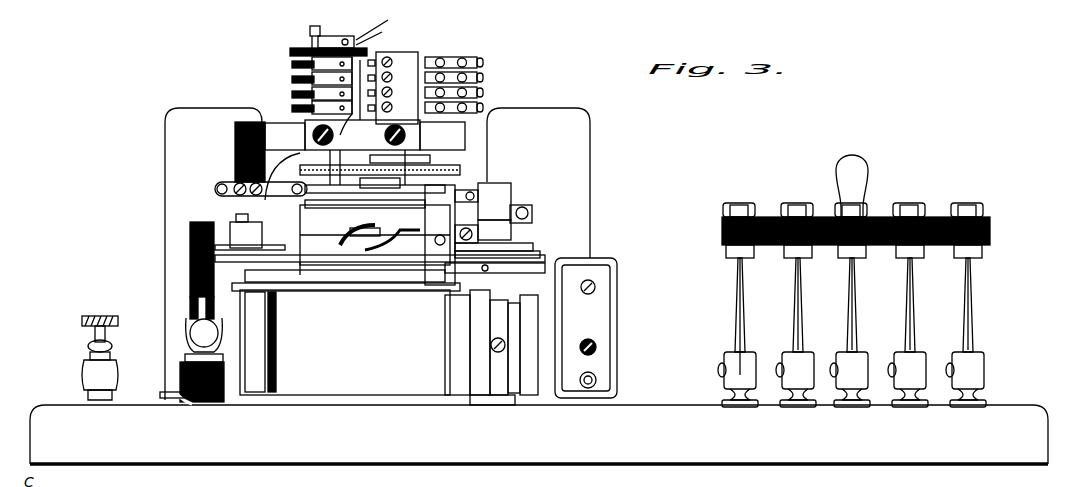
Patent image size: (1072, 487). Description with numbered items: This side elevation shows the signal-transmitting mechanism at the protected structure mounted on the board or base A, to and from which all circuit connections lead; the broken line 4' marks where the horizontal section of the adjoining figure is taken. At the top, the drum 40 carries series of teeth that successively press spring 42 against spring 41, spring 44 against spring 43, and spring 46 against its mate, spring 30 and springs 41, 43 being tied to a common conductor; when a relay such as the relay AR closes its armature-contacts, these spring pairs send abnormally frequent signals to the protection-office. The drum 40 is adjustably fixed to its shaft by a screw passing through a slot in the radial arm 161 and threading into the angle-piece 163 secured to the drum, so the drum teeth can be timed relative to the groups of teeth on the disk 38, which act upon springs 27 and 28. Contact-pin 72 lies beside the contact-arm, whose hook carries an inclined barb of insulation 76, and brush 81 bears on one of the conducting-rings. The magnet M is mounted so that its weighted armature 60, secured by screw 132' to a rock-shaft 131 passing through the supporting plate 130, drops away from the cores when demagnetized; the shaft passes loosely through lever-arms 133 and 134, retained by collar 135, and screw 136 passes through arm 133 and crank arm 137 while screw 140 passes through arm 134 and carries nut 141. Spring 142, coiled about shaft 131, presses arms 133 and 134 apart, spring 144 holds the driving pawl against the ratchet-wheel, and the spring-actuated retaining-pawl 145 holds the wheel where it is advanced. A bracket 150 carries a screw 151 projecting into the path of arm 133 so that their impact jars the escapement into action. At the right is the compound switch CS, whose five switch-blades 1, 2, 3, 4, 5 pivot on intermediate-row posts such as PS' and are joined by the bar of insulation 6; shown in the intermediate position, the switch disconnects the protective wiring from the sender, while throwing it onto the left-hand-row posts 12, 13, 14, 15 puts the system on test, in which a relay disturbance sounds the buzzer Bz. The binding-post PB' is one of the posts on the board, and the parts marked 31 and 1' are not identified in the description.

The board or base A is at (604, 456).
The section line 4' is at (375, 254).
The drum 40 is at (298, 50).
The spring 46 is at (312, 63).
The spring 44 is at (312, 78).
The spring 42 is at (312, 93).
The spring 43 is at (360, 72).
The spring 41 is at (351, 96).
The radial arm 161 is at (336, 36).
The angle-piece 163 is at (382, 21).
The retaining-pawl 145 is at (383, 32).
The spring 30 is at (362, 135).
The spring 27 is at (285, 136).
The disk 38 is at (442, 136).
The support 31 is at (290, 108).
The relay AR is at (359, 166).
The contact-pin 72 is at (320, 228).
The spring 28 is at (290, 205).
The spring 144 is at (290, 262).
The brush 81 is at (338, 262).
The barb of insulation 76 is at (360, 262).
The bracket 150 is at (438, 246).
The plate 130 is at (455, 272).
The magnet M is at (346, 339).
The screw 151 is at (410, 270).
The crank arm 137 is at (465, 280).
The screw 132' is at (484, 345).
The shaft 131 is at (498, 400).
The nut 141 is at (490, 188).
The collar 135 is at (505, 197).
The screw 140 is at (526, 212).
The lever-arm 134 is at (512, 218).
The lever-arm 133 is at (512, 236).
The screw 136 is at (520, 249).
The spring 142 is at (512, 268).
The armature 60 is at (540, 313).
The buzzer Bz is at (639, 325).
The key 1' is at (181, 313).
The binding-post PB' is at (75, 358).
The bar of insulation 6 is at (990, 230).
The compound switch CS is at (862, 200).
The switch-blade 1 is at (731, 289).
The switch-blade 2 is at (794, 274).
The switch-blade 3 is at (848, 274).
The switch-blade 4 is at (905, 277).
The switch-blade 5 is at (964, 274).
The switch-post PS' is at (715, 379).
The switch-post 12 is at (796, 379).
The switch-post 13 is at (850, 379).
The switch-post 14 is at (908, 379).
The switch-post 15 is at (966, 379).